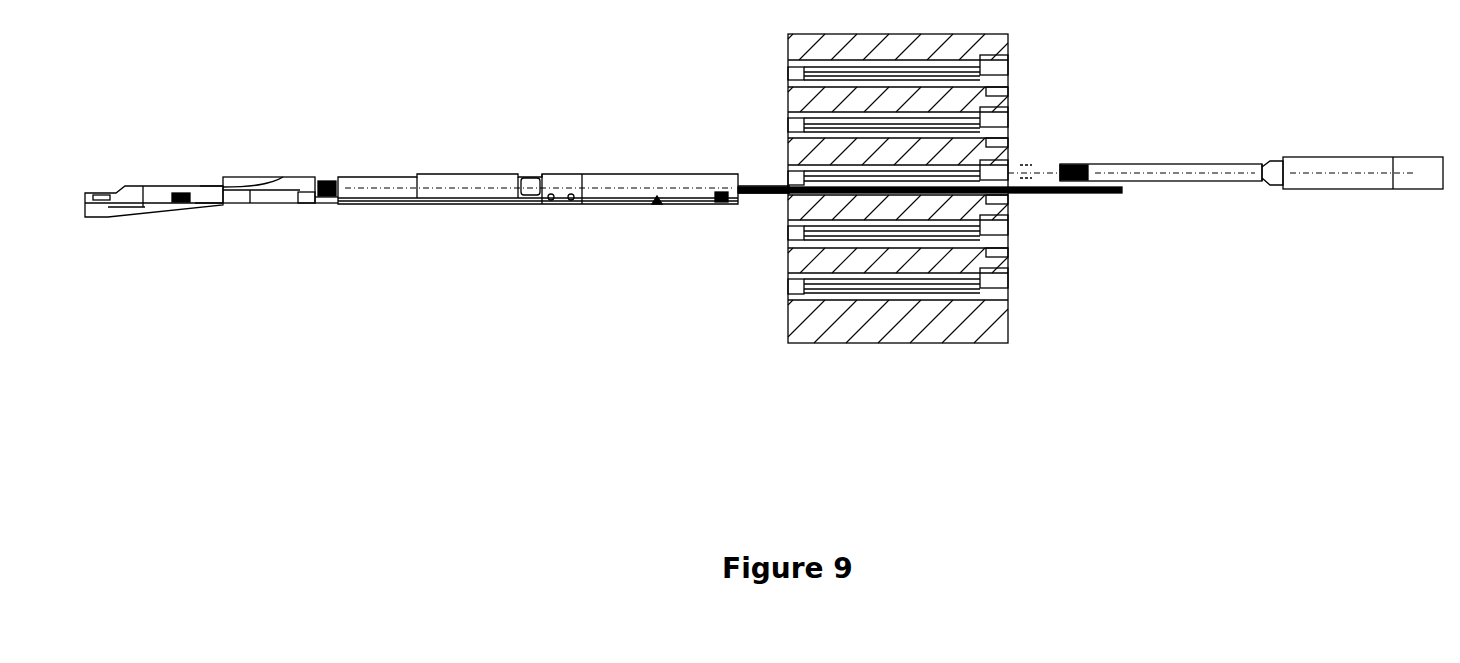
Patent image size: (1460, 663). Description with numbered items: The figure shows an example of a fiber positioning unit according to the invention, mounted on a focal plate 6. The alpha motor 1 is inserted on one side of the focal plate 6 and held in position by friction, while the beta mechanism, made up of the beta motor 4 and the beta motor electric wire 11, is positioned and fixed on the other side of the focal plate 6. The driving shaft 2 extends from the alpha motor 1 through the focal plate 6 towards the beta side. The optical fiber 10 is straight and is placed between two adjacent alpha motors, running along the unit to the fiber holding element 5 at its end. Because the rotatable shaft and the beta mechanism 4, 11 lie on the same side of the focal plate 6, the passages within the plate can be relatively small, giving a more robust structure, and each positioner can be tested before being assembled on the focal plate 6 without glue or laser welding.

The alpha motor 1 is at (1417, 190).
The driving shaft 2 is at (1157, 163).
The beta motor 4 is at (455, 179).
The fiber holding element 5 is at (218, 200).
The focal plate 6 is at (853, 328).
The optical fiber 10 is at (123, 215).
The beta motor electric wire 11 is at (1090, 195).